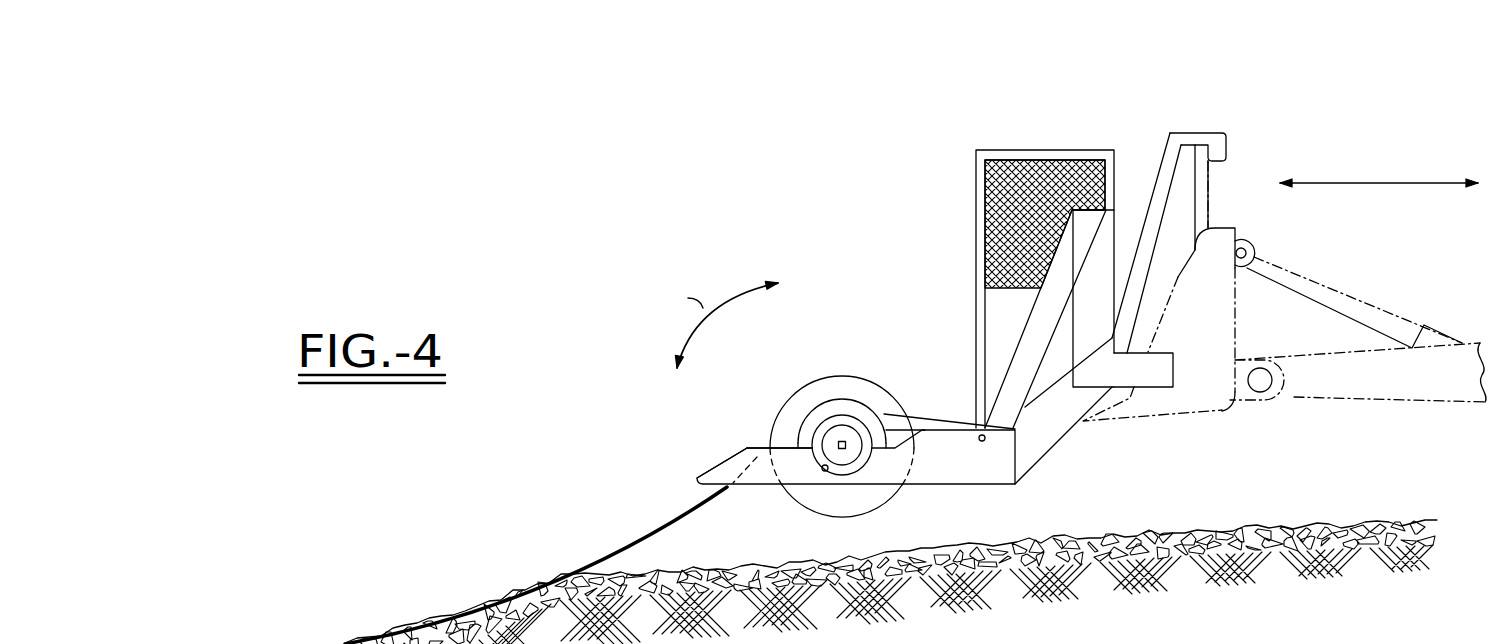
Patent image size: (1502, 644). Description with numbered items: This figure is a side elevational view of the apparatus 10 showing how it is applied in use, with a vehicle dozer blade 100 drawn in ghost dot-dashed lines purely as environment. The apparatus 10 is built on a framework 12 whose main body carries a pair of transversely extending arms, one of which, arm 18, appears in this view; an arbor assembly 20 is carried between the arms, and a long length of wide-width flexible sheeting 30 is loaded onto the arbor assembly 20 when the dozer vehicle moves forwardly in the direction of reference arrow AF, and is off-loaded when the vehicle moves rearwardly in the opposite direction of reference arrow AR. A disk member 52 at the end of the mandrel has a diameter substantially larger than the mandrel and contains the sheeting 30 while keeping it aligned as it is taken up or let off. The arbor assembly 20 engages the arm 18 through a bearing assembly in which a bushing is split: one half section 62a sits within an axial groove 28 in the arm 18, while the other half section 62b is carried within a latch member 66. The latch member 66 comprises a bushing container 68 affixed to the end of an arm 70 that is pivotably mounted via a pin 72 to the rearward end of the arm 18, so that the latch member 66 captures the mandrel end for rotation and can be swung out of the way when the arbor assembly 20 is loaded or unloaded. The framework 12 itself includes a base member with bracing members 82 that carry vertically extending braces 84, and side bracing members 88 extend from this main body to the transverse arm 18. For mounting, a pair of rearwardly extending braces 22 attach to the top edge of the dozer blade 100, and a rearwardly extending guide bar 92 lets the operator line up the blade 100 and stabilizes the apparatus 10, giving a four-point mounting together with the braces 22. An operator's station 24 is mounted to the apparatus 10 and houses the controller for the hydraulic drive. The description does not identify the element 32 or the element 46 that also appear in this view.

The apparatus 10 is at (778, 242).
The framework 12 is at (1045, 268).
The arm 18 is at (713, 468).
The arbor assembly 20 is at (765, 426).
The rearwardly extending braces 22 is at (1216, 131).
The operator's station 24 is at (1000, 148).
The axial groove 28 is at (823, 467).
The flexible sheeting 30 is at (608, 558).
The diagonal strut 32 is at (1150, 178).
The soil 46 is at (891, 582).
The disk configured member 52 is at (876, 505).
The one-half section of bushing 62a is at (840, 472).
The other half section of bushing 62b is at (850, 418).
The latch member 66 is at (832, 397).
The bushing container 68 is at (808, 413).
The arm 70 is at (918, 413).
The pin 72 is at (983, 441).
The bracing members 82 is at (1060, 453).
The vertically extending braces 84 is at (1075, 345).
The side bracing members 88 is at (1030, 336).
The guide bar 92 is at (1145, 388).
The vehicle dozer blade 100 is at (1226, 416).